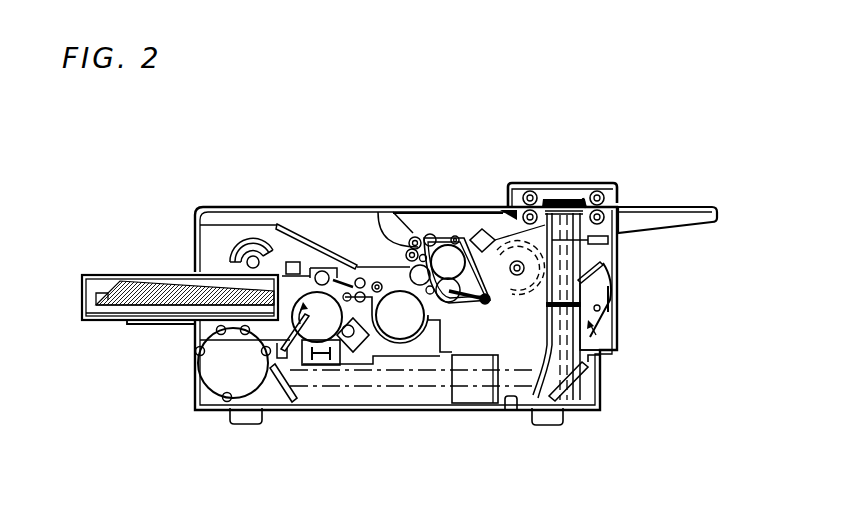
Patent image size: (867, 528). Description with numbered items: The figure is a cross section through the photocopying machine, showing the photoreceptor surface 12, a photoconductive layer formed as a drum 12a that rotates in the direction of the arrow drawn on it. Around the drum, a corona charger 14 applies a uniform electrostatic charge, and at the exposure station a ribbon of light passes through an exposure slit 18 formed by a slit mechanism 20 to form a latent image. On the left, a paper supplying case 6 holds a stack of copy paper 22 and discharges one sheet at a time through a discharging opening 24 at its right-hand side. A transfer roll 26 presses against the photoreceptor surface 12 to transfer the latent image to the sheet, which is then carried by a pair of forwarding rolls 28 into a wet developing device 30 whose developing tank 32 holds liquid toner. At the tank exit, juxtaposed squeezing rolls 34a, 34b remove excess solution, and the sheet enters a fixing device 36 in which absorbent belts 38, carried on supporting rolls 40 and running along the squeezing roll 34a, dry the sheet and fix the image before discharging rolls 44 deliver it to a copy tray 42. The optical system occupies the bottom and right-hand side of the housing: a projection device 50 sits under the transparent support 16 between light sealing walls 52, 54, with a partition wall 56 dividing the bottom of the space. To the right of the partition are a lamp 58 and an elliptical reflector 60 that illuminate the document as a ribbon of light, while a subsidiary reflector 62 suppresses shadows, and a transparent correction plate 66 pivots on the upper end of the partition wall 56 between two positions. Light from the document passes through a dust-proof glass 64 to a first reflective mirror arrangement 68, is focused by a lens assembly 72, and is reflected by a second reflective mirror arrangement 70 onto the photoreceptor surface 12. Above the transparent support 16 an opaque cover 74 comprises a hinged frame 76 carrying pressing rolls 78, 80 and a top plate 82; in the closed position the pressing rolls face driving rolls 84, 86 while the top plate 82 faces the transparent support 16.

The paper supplying case 6 is at (158, 266).
The photoreceptor surface 12 is at (292, 322).
The drum 12a is at (317, 317).
The corona charger 14 is at (323, 365).
The transparent support 16 is at (590, 209).
The exposure slit 18 is at (292, 318).
The slit mechanism 20 is at (293, 350).
The copy paper 22 is at (137, 275).
The discharging opening 24 is at (250, 240).
The transfer roll 26 is at (323, 246).
The forwarding rolls 28 is at (320, 271).
The developing device 30 is at (427, 348).
The developing tank 32 is at (397, 340).
The squeezing roll 34a is at (456, 238).
The squeezing roll 34b is at (486, 303).
The fixing device 36 is at (420, 246).
The absorbent belts 38 is at (482, 228).
The supporting rolls 40 is at (447, 262).
The copy tray 42 is at (358, 277).
The discharging rolls 44 is at (375, 282).
The projection device 50 is at (594, 355).
The light sealing wall 52 is at (605, 264).
The light sealing wall 54 is at (611, 280).
The partition wall 56 is at (600, 355).
The lamp 58 is at (603, 340).
The reflector 60 is at (597, 316).
The subsidiary reflector 62 is at (610, 242).
The dust-proof glass 64 is at (548, 322).
The transparent correction plate 66 is at (612, 300).
The first reflective mirror arrangement 68 is at (567, 397).
The second reflective mirror arrangement 70 is at (283, 393).
The lens assembly 72 is at (477, 403).
The opaque cover 74 is at (582, 164).
The frame 76 is at (560, 198).
The pressing roll 78 is at (537, 199).
The pressing roll 80 is at (606, 198).
The top plate 82 is at (586, 198).
The driving roll 84 is at (522, 192).
The driving roll 86 is at (650, 208).